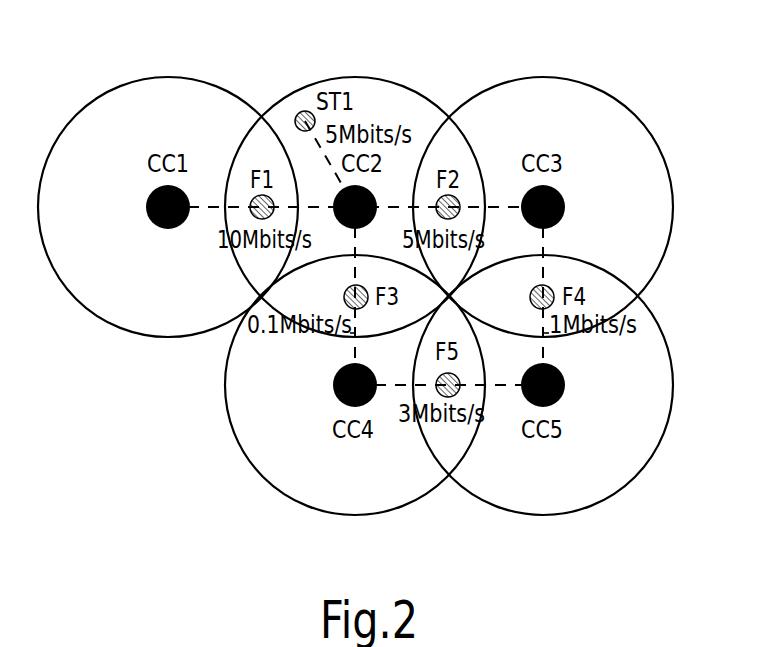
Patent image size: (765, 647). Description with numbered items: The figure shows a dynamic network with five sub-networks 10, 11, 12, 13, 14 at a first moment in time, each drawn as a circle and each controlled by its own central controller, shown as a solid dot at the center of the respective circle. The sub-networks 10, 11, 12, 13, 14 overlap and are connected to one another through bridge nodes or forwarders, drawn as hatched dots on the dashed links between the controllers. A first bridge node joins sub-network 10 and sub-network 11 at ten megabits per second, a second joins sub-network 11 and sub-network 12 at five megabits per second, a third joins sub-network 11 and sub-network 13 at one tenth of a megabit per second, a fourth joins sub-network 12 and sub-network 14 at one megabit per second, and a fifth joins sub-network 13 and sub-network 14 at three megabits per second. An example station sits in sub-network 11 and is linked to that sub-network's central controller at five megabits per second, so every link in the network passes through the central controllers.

The sub-network 10 is at (171, 92).
The sub-network 11 is at (371, 92).
The sub-network 12 is at (544, 92).
The sub-network 13 is at (357, 500).
The sub-network 14 is at (541, 500).